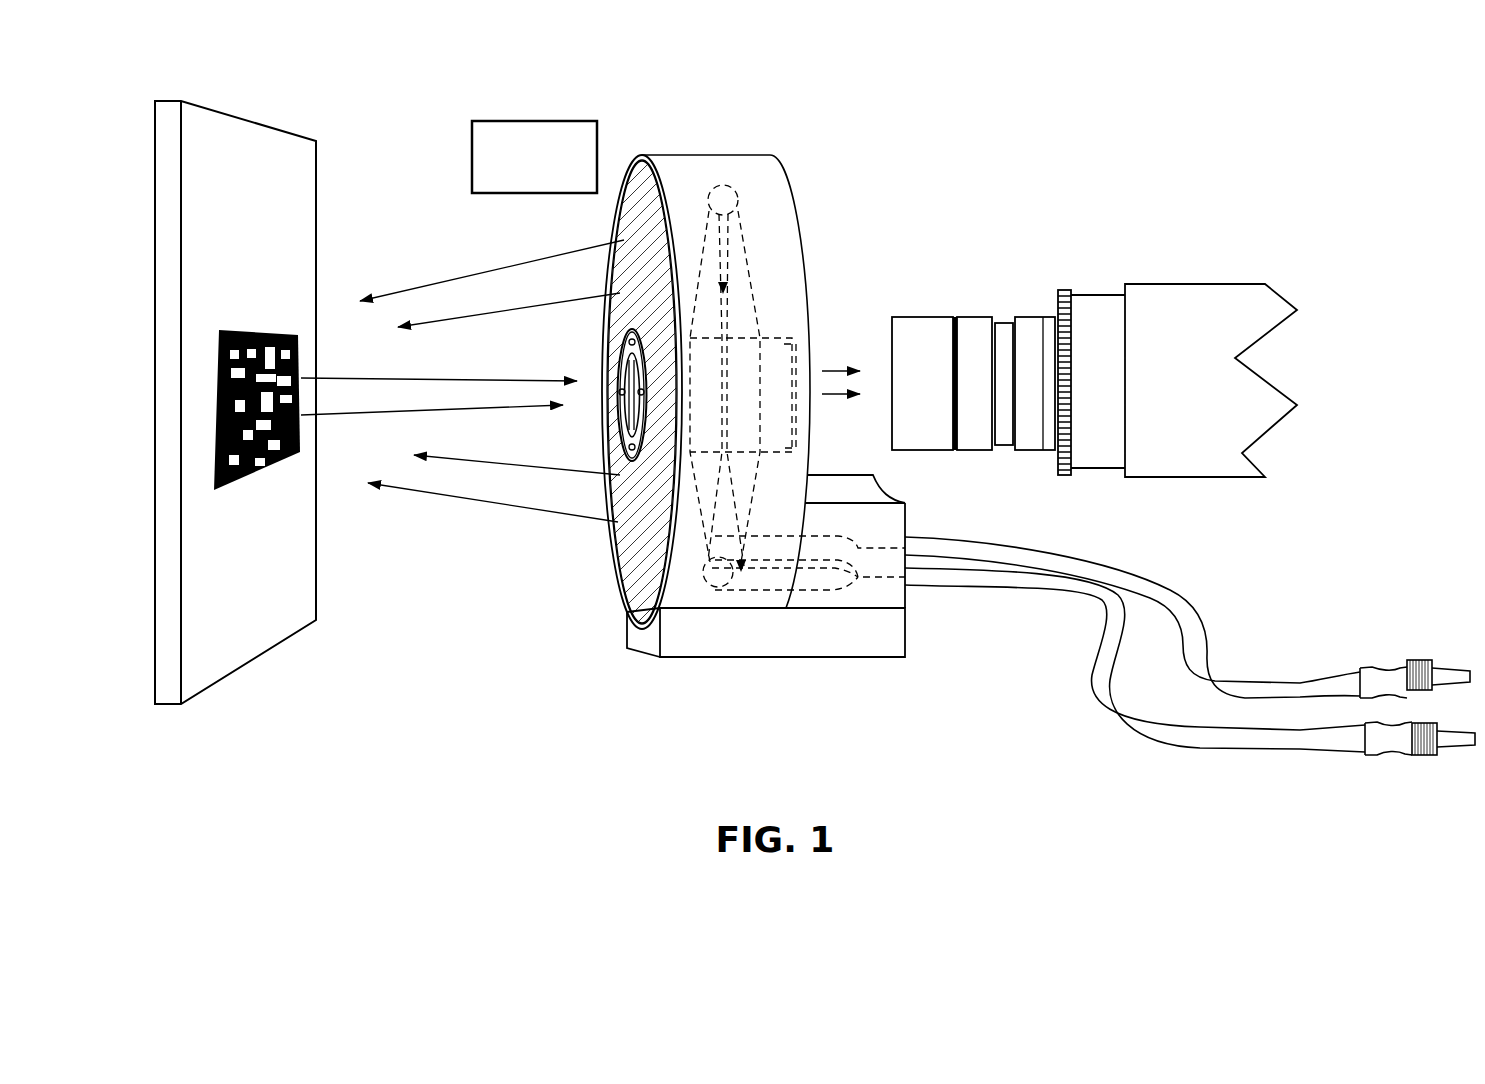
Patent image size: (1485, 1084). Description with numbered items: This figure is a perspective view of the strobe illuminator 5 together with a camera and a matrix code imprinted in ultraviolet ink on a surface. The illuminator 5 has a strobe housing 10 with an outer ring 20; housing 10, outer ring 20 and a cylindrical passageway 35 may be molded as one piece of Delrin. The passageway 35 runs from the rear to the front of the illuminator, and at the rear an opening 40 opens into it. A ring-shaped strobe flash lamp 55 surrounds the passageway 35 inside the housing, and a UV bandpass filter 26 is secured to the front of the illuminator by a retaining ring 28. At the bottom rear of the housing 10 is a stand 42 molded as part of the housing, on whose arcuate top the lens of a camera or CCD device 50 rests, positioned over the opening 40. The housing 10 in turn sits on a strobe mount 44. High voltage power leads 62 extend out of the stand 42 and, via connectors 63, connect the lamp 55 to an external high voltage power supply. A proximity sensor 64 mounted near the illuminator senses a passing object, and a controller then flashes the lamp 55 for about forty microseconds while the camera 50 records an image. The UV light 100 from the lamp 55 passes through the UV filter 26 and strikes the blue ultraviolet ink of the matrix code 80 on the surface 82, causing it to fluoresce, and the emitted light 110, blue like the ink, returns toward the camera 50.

The strobe illuminator 5 is at (655, 133).
The strobe housing 10 is at (740, 153).
The outer ring 20 is at (683, 157).
The ultraviolet bandpass filter 26 is at (592, 535).
The retaining ring 28 is at (618, 384).
The cylindrical passageway 35 is at (772, 348).
The opening 40 is at (797, 382).
The stand 42 is at (903, 533).
The strobe mount 44 is at (903, 640).
The camera or CCD device 50 is at (933, 313).
The ring-shaped strobe flash lamp 55 is at (748, 244).
The high voltage power leads 62 is at (1277, 686).
The connectors 63 is at (1384, 668).
The sensor 64 is at (818, 537).
The matrix code 80 is at (300, 342).
The surface 82 is at (311, 215).
The UV light 100 is at (459, 276).
The emitted light 110 is at (398, 378).